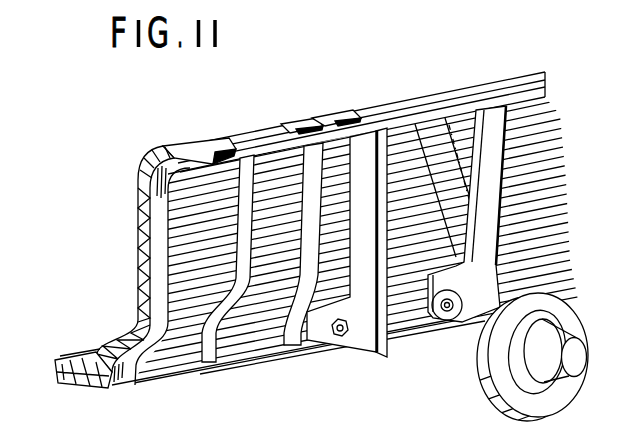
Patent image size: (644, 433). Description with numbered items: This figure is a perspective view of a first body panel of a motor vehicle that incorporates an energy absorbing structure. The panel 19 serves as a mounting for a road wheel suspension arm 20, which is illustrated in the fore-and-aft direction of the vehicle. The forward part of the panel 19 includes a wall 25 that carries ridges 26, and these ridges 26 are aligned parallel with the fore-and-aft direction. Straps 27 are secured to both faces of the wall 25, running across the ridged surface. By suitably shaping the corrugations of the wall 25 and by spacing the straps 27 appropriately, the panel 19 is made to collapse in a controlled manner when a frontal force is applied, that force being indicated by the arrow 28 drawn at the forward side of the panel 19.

The panel 19 is at (462, 88).
The road wheel suspension arm 20 is at (463, 374).
The wall 25 is at (186, 208).
The ridges 26 is at (140, 271).
The straps 27 is at (197, 143).
The arrow 28 is at (110, 299).